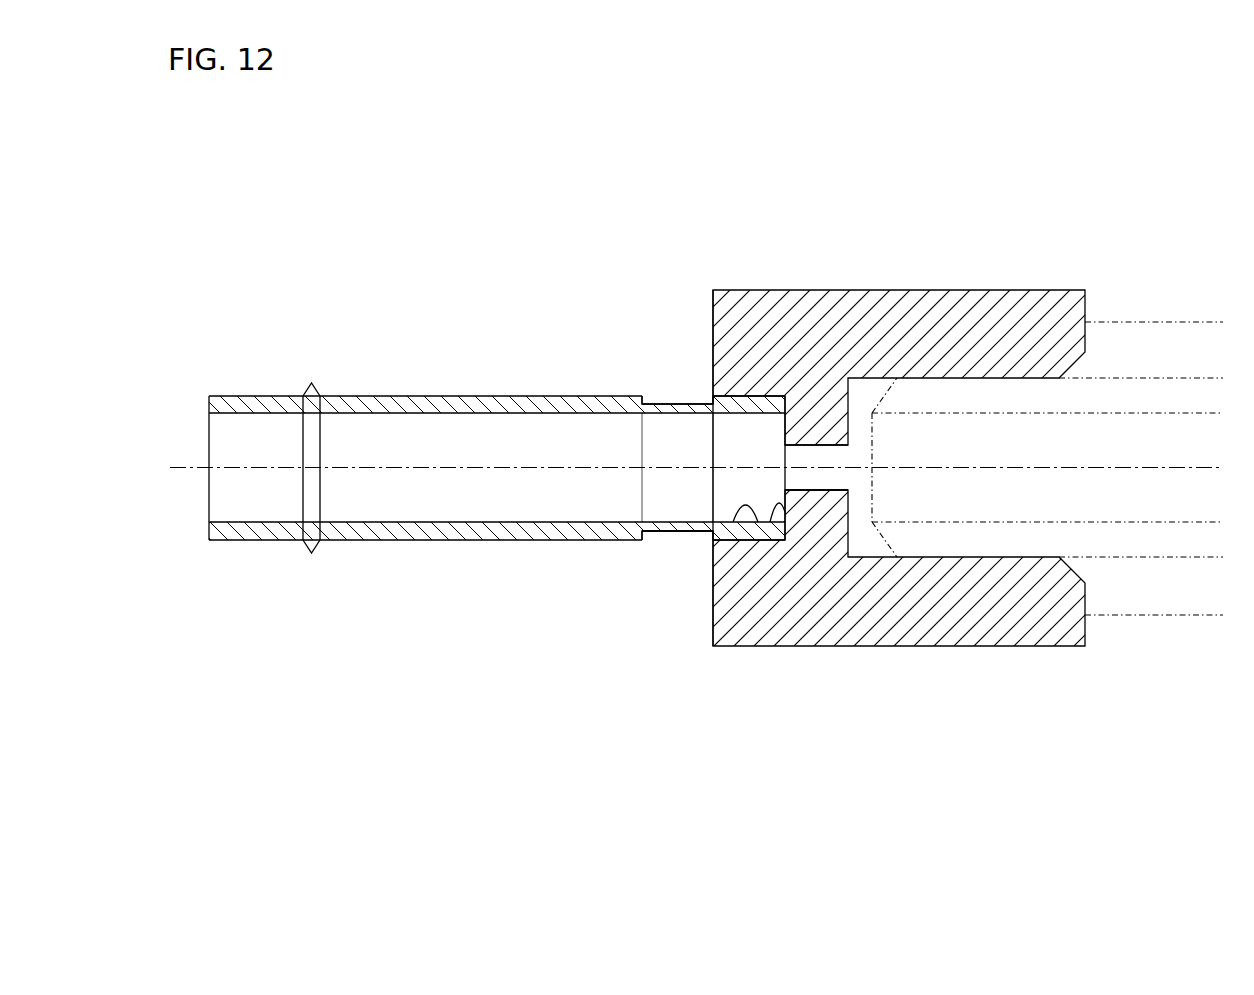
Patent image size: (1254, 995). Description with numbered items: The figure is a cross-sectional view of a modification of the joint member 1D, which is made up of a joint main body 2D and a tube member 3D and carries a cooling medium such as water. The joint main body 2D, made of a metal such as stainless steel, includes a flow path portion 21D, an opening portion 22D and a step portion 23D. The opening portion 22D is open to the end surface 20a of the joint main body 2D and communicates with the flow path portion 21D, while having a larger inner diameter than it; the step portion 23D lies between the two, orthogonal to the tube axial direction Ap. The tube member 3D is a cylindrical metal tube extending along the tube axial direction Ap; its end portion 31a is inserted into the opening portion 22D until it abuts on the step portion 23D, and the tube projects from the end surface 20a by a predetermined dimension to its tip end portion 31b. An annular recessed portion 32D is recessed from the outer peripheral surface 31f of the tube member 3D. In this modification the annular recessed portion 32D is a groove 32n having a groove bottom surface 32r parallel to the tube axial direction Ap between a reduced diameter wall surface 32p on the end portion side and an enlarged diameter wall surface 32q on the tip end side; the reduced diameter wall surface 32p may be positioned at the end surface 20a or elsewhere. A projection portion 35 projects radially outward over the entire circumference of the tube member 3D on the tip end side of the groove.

The joint member 1D is at (745, 240).
The joint main body 2D is at (1017, 275).
The end surface 20a is at (713, 307).
The flow path portion 21D is at (823, 484).
The opening portion 22D is at (733, 522).
The step portion 23D is at (770, 522).
The tube member 3D is at (422, 380).
The end portion 31a is at (744, 396).
The tip end portion 31b is at (213, 543).
The outer peripheral surface 31f is at (485, 542).
The annular recessed portion 32D is at (675, 404).
The groove 32n is at (677, 467).
The enlarged diameter wall surface 32q is at (648, 543).
The groove bottom surface 32r is at (670, 535).
The reduced diameter wall surface 32p is at (708, 535).
The projection portion 35 is at (312, 383).
The tube axial direction Ap is at (1142, 467).